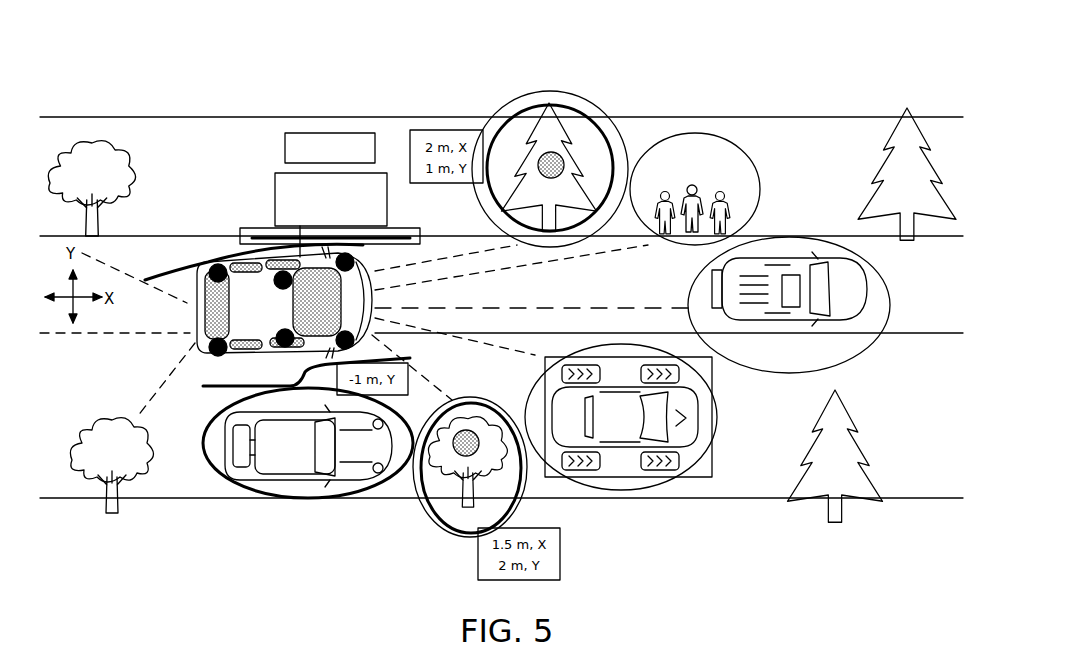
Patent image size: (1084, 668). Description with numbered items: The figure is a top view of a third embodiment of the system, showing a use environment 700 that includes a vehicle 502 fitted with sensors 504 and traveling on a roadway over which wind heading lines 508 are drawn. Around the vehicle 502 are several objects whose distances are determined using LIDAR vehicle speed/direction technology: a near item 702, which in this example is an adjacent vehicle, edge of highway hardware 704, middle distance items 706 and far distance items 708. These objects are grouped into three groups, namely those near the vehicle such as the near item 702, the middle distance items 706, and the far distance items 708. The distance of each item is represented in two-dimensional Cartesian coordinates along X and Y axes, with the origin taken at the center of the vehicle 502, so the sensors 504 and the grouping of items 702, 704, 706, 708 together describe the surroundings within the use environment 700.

The use environment 700 is at (952, 70).
The vehicle 502 is at (190, 323).
The sensors 504 is at (217, 262).
The wind heading lines 508 is at (148, 280).
The near item 702 is at (227, 480).
The edge of highway hardware 704 is at (259, 228).
The middle distance items 706 is at (600, 118).
The far distance items 708 is at (727, 138).